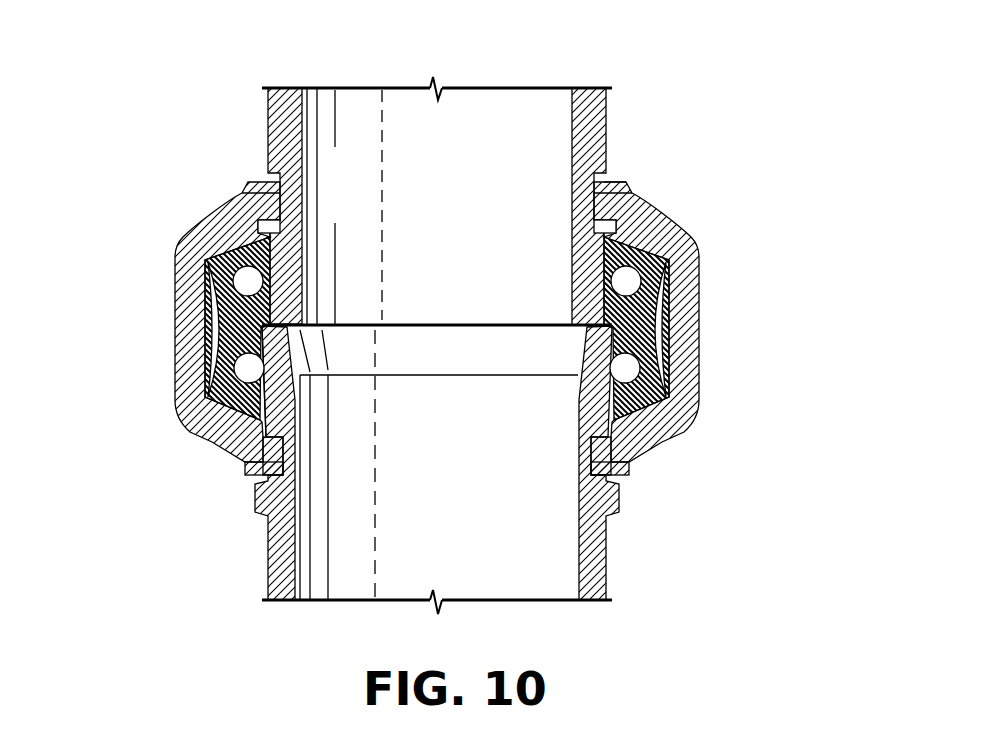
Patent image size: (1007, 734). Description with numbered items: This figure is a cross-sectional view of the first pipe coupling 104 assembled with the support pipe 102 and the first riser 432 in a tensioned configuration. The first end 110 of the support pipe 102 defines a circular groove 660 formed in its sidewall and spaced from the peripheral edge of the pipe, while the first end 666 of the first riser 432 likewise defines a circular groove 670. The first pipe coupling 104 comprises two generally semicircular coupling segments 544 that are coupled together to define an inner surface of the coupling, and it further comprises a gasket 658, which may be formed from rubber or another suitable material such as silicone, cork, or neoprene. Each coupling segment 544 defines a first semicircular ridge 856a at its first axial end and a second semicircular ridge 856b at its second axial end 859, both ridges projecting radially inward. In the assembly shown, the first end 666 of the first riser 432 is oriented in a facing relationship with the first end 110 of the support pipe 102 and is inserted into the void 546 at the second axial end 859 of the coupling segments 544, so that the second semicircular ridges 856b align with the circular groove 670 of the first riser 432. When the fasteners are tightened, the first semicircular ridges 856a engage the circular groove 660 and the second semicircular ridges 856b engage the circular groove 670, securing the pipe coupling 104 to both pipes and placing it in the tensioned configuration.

The first riser 432 is at (597, 92).
The support pipe 102 is at (592, 575).
The first end of the support pipe 110 is at (283, 397).
The first pipe coupling 104 is at (771, 310).
The semicircular coupling segments 544 is at (174, 388).
The void 546 is at (246, 292).
The gasket 658 is at (200, 440).
The circular groove 660 is at (287, 457).
The first end of the first riser 666 is at (297, 308).
The circular groove 670 is at (280, 206).
The first semicircular ridge 856a is at (247, 463).
The second semicircular ridge 856b is at (247, 191).
The second axial end 859 is at (617, 181).